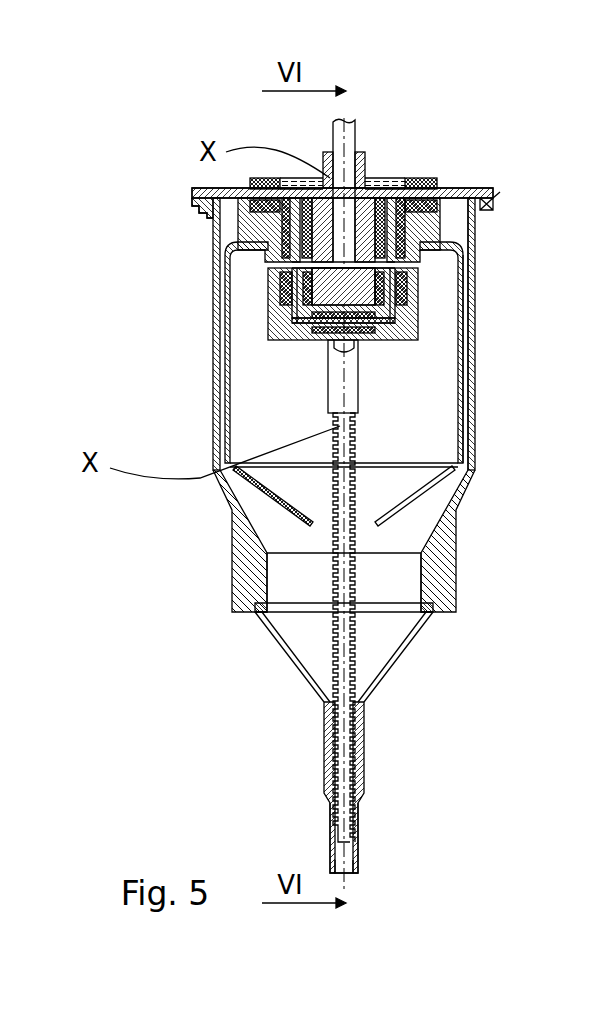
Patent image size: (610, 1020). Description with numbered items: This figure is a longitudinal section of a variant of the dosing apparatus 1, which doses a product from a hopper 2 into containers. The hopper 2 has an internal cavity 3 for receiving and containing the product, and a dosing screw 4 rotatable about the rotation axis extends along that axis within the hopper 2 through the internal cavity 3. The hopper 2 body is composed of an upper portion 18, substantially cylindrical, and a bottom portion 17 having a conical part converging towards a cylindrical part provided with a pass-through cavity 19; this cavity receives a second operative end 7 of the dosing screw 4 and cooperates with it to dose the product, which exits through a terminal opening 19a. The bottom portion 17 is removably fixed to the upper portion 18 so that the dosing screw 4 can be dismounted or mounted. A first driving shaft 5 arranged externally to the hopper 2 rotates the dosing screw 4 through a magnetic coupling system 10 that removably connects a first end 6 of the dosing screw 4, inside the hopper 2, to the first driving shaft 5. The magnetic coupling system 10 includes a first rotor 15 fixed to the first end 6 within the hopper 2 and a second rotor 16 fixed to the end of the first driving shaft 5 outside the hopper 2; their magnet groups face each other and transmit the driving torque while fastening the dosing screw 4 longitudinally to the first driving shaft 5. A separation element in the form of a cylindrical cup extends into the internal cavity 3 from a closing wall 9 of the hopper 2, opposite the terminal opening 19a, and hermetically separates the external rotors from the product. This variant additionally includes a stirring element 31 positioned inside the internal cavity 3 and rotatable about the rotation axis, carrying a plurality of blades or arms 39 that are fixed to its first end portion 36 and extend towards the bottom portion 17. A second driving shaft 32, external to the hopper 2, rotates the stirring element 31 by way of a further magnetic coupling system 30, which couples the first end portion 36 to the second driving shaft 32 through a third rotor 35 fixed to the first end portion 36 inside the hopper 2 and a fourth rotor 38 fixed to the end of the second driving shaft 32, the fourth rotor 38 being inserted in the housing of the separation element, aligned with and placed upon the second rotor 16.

The dosing apparatus 1 is at (173, 108).
The hopper 2 is at (216, 520).
The internal cavity 3 is at (405, 447).
The dosing screw 4 is at (352, 598).
The first driving shaft 5 is at (334, 124).
The first end 6 is at (352, 372).
The second operative end 7 is at (357, 698).
The closing wall 9 is at (445, 192).
The magnetic coupling system 10 is at (293, 340).
The first rotor 15 is at (272, 292).
The second rotor 16 is at (280, 318).
The bottom portion 17 is at (298, 635).
The upper portion 18 is at (473, 432).
The pass-through cavity 19 is at (338, 728).
The terminal opening 19a is at (340, 858).
The further magnetic coupling system 30 is at (458, 228).
The stirring element 31 is at (458, 312).
The second driving shaft 32 is at (362, 167).
The third rotor 35 is at (188, 222).
The first end portion 36 is at (458, 248).
The fourth rotor 38 is at (490, 192).
The blades or arms 39 is at (405, 505).